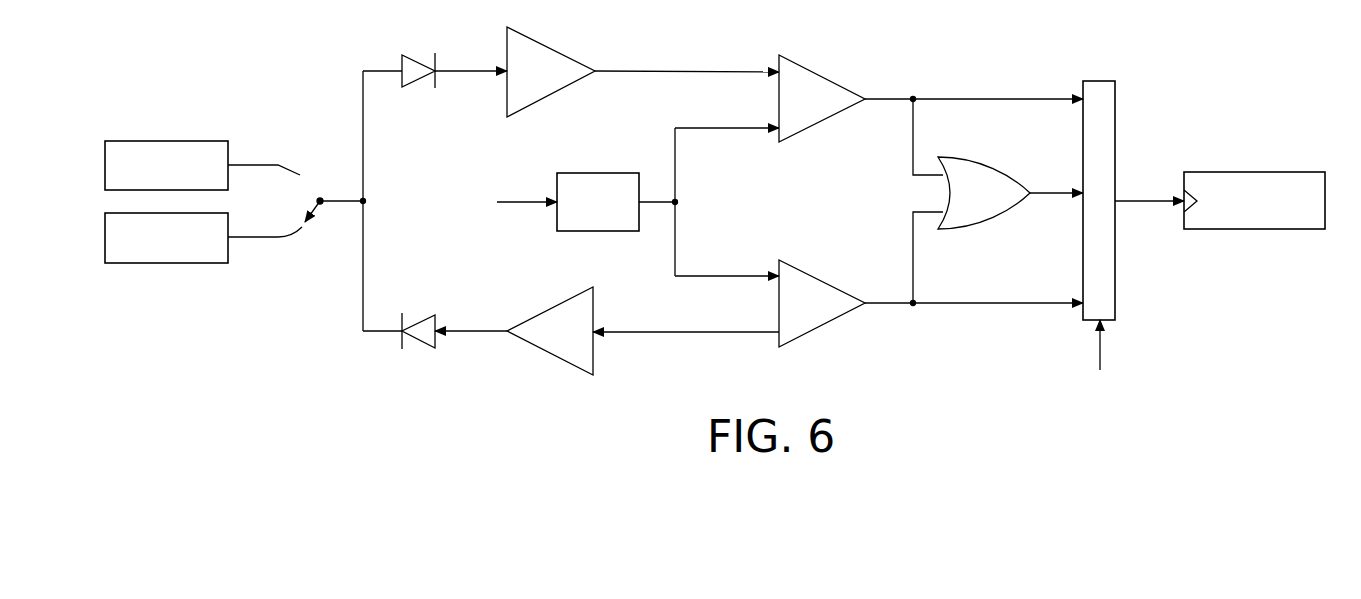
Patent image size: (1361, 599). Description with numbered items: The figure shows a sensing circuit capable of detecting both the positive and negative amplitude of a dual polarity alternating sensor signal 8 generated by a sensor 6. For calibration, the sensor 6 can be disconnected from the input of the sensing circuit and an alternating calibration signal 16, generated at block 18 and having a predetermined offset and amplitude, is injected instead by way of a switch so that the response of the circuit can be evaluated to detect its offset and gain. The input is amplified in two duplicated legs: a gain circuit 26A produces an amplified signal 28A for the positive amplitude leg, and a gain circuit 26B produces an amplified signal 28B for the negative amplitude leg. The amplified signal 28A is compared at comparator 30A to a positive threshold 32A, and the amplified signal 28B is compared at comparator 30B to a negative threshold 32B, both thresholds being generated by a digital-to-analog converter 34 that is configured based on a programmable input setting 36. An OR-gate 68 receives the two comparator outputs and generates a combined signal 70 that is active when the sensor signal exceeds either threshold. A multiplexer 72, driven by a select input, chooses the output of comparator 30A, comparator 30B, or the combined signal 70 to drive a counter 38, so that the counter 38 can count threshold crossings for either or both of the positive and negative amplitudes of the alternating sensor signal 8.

The sensor 6 is at (166, 140).
The alternating sensor signal 8 is at (251, 164).
The alternating calibration signal 16 is at (256, 240).
The calibration signal generator block 18 is at (168, 264).
The gain circuit 26A is at (550, 97).
The gain circuit 26B is at (553, 355).
The amplified signal 28A is at (642, 74).
The amplified signal 28B is at (655, 336).
The comparator 30A is at (826, 122).
The comparator 30B is at (823, 330).
The positive threshold 32A is at (752, 132).
The negative threshold 32B is at (742, 272).
The digital-to-analog converter 34 is at (598, 232).
The input setting 36 is at (518, 205).
The counter 38 is at (1255, 231).
The OR-gate 68 is at (1003, 167).
The combined signal 70 is at (1045, 196).
The multiplexer 72 is at (1098, 80).